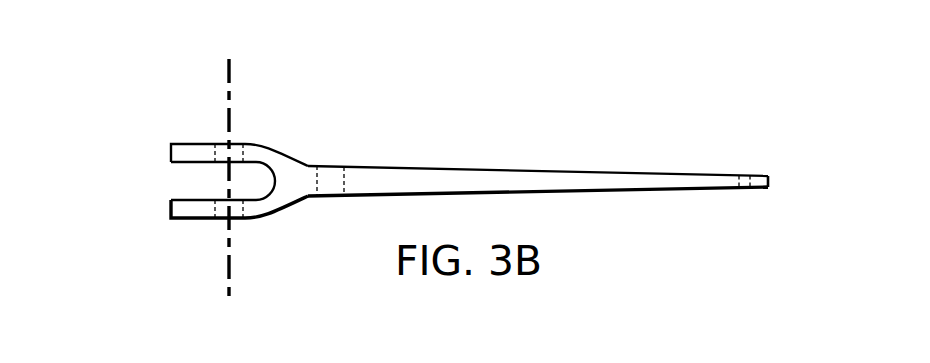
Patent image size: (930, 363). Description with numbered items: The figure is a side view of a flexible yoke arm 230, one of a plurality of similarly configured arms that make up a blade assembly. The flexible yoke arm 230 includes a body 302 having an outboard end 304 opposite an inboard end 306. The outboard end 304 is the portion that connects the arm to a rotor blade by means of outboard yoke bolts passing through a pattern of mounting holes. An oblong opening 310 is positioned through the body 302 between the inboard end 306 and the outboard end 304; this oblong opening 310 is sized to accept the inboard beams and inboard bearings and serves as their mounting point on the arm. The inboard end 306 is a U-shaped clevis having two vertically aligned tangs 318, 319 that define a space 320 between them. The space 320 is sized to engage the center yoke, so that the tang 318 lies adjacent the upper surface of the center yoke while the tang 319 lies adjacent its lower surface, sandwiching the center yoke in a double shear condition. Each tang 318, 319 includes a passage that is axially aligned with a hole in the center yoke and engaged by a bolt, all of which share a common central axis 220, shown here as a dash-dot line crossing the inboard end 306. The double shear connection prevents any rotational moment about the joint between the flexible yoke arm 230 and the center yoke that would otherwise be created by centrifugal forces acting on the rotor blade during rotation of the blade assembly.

The central axis 220 is at (226, 72).
The flexible yoke arm 230 is at (431, 156).
The body 302 is at (533, 147).
The outboard end 304 is at (728, 172).
The inboard end 306 is at (201, 202).
The oblong opening 310 is at (319, 181).
The tang 318 is at (170, 152).
The tang 319 is at (170, 208).
The space 320 is at (191, 177).